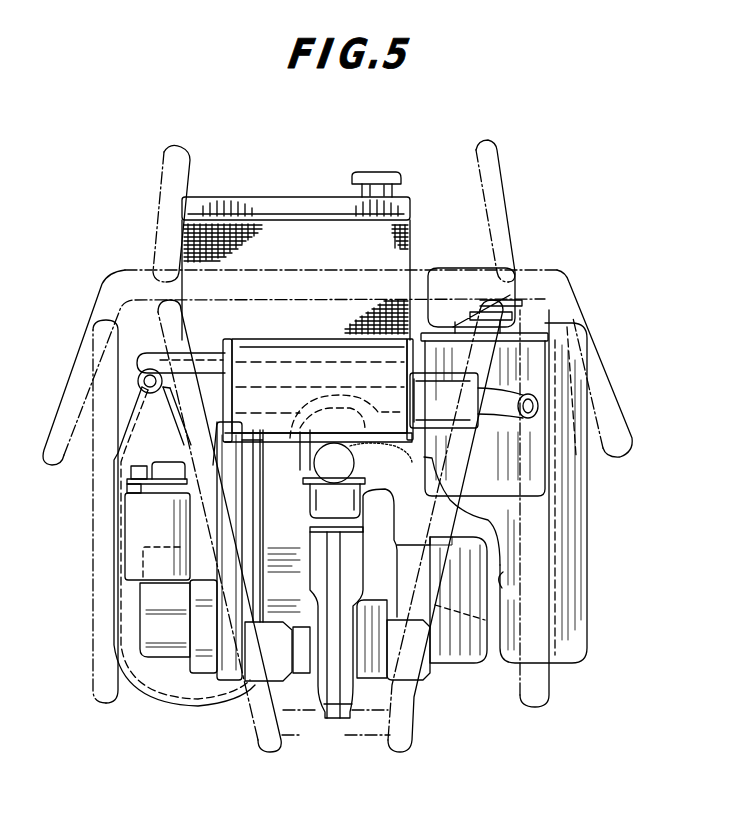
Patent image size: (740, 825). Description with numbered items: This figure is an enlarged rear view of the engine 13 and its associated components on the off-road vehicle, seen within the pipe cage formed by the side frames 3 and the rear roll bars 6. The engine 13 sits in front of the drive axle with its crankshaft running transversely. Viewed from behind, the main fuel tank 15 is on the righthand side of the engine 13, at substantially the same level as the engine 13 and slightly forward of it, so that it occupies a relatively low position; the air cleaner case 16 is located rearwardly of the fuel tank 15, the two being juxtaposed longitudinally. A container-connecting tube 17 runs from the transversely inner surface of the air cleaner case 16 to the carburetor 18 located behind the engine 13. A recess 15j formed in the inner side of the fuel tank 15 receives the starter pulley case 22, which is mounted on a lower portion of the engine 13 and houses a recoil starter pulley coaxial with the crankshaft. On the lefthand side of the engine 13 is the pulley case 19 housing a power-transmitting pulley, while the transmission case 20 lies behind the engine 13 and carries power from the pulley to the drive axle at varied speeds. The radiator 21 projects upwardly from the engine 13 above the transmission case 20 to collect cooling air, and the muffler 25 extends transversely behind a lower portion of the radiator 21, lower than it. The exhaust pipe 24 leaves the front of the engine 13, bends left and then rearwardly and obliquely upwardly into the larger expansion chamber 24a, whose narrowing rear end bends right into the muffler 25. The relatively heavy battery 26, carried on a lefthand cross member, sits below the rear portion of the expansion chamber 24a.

The side frames 3 is at (613, 426).
The rear roll bars 6 is at (502, 198).
The engine 13 is at (357, 562).
The main fuel tank 15 is at (570, 628).
The recess 15j is at (502, 582).
The air cleaner case 16 is at (530, 361).
The container-connecting tube 17 is at (382, 478).
The carburetor 18 is at (322, 405).
The pulley case 19 is at (223, 593).
The transmission case 20 is at (322, 668).
The radiator 21 is at (237, 214).
The starter pulley case 22 is at (473, 650).
The exhaust pipe 24 is at (140, 650).
The expansion chamber 24a is at (127, 458).
The muffler 25 is at (290, 346).
The battery 26 is at (133, 537).